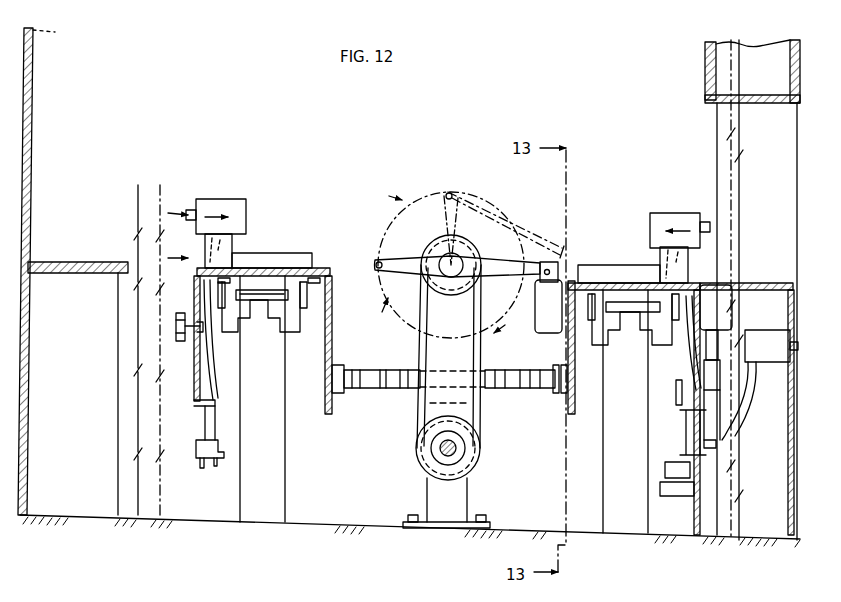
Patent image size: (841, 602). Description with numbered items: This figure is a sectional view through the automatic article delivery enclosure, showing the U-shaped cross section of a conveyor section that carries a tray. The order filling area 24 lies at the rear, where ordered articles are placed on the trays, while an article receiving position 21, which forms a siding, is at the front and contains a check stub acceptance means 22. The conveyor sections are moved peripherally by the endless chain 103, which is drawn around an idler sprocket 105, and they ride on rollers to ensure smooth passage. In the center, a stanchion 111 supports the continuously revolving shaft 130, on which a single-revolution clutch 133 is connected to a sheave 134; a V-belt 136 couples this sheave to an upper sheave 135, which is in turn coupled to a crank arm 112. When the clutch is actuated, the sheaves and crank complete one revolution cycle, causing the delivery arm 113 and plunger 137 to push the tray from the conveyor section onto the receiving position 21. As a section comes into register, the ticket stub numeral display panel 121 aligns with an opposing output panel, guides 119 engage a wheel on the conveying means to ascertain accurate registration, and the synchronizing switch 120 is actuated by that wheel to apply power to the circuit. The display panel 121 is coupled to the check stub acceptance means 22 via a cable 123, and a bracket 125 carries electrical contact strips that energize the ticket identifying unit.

The order filling area 24 is at (73, 260).
The article receiving position 21 is at (780, 278).
The check stub acceptance means 22 is at (763, 330).
The endless chain 103 is at (345, 368).
The idler sprocket 105 is at (506, 369).
The stanchion 111 is at (462, 490).
The crank arm 112 is at (444, 224).
The delivery plunger 113 is at (525, 250).
The guide 119 is at (722, 326).
The synchronizing switch 120 is at (676, 398).
The ticket stub numeral display panel 121 is at (718, 446).
The cable 123 is at (744, 415).
The bracket 125 is at (672, 498).
The shaft 130 is at (466, 456).
The single-revolution clutch 133 is at (470, 440).
The sheave 134 is at (424, 452).
The sheave 135 is at (436, 252).
The V-belt 136 is at (487, 320).
The plunger 137 is at (550, 268).